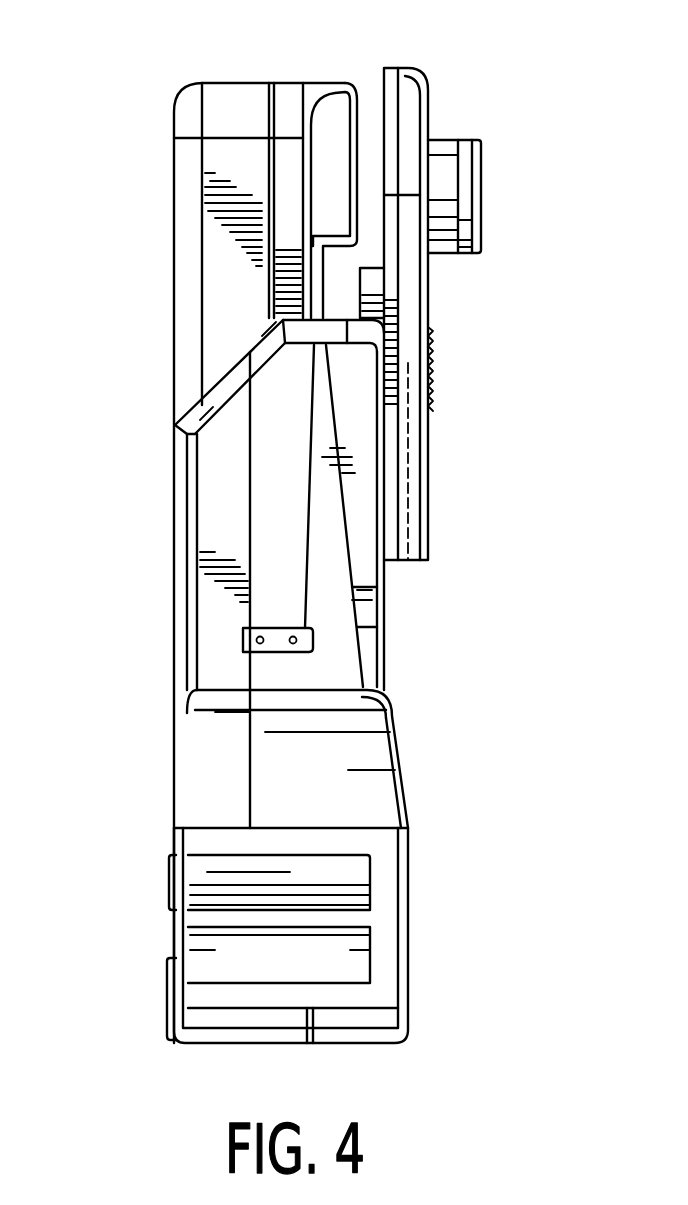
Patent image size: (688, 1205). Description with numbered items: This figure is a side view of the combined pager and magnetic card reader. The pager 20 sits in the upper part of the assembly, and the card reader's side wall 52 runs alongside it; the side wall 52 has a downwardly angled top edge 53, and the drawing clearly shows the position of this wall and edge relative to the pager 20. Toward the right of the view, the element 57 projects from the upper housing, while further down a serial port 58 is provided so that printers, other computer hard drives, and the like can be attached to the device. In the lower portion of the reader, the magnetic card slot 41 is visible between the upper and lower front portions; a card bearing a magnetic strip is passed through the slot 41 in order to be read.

The pager 20 is at (228, 175).
The magnetic card slot 41 is at (175, 920).
The side wall 52 is at (210, 498).
The downwardly angled top edge 53 is at (193, 406).
The mounting plate 57 is at (430, 108).
The serial port 58 is at (317, 643).